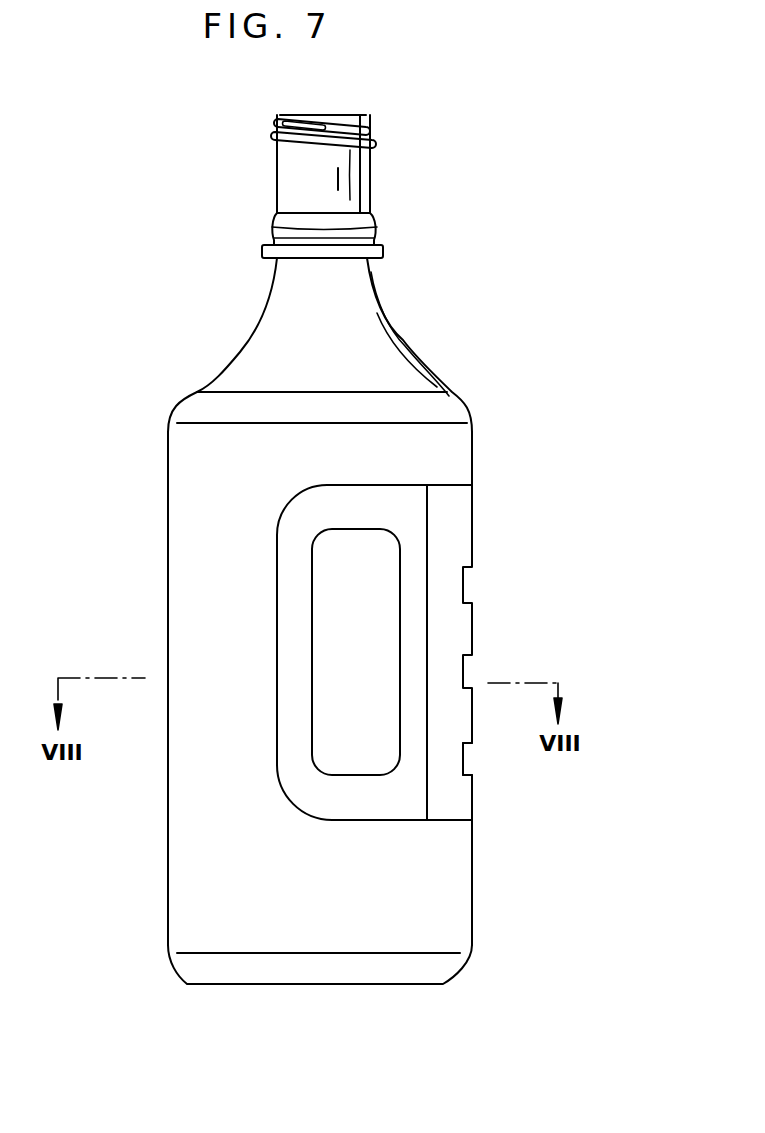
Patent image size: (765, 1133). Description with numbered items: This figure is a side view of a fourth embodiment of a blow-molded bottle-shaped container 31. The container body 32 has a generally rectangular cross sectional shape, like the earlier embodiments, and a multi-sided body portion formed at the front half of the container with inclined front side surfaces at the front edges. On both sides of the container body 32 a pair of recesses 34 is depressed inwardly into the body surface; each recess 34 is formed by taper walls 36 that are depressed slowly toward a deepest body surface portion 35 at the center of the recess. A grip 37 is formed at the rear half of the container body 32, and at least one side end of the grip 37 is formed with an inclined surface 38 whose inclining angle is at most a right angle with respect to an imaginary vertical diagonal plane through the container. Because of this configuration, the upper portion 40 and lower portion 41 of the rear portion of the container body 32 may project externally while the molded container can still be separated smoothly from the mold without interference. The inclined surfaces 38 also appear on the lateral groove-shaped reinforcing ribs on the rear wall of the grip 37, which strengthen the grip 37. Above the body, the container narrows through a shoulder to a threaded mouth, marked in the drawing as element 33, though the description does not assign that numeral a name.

The bottle-shaped container 31 is at (197, 386).
The container body 32 is at (173, 620).
The mouth / neck portion 33 is at (347, 172).
The recess 34 is at (380, 573).
The deepest body surface portion 35 is at (327, 582).
The taper wall 36 is at (287, 760).
The grip 37 is at (500, 612).
The inclined surface 38 is at (453, 793).
The upper portion 40 is at (442, 428).
The lower portion 41 is at (447, 927).